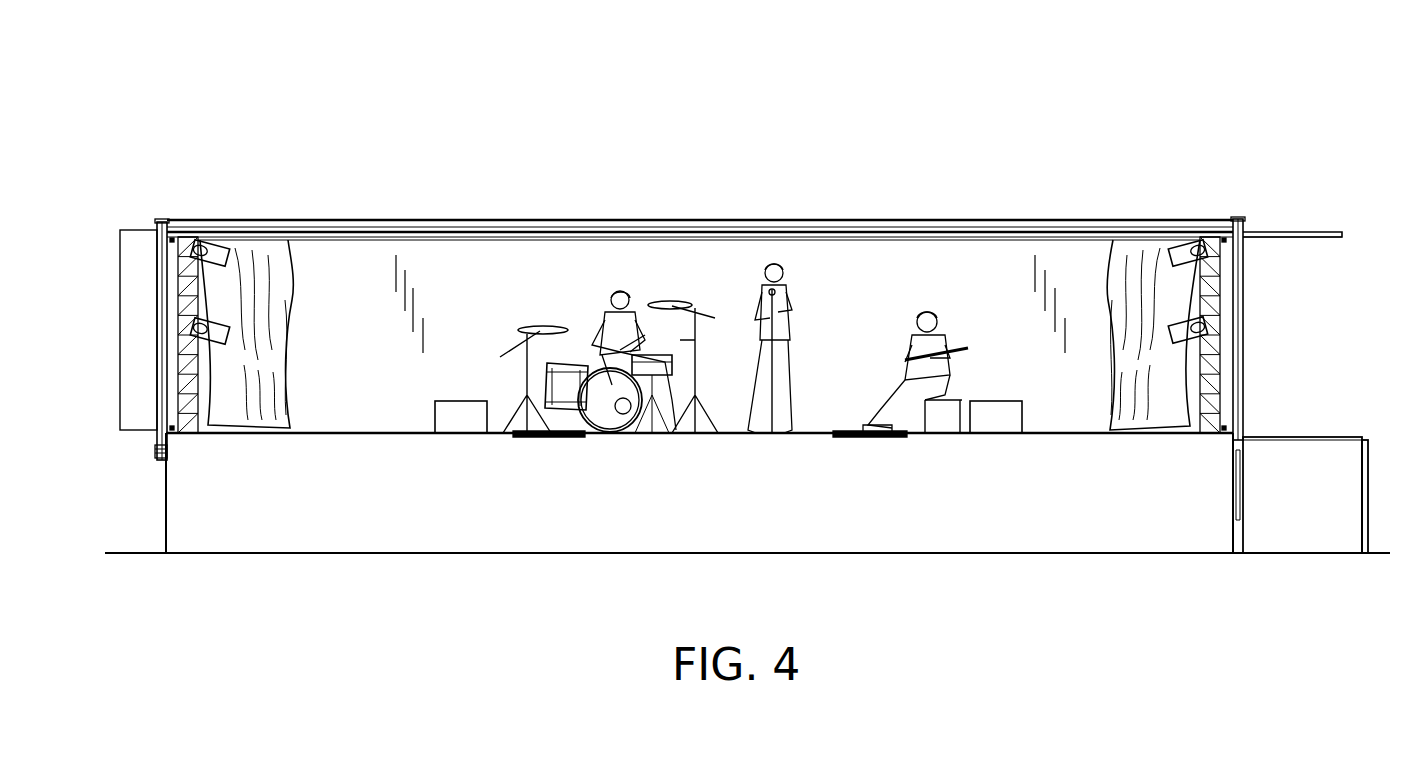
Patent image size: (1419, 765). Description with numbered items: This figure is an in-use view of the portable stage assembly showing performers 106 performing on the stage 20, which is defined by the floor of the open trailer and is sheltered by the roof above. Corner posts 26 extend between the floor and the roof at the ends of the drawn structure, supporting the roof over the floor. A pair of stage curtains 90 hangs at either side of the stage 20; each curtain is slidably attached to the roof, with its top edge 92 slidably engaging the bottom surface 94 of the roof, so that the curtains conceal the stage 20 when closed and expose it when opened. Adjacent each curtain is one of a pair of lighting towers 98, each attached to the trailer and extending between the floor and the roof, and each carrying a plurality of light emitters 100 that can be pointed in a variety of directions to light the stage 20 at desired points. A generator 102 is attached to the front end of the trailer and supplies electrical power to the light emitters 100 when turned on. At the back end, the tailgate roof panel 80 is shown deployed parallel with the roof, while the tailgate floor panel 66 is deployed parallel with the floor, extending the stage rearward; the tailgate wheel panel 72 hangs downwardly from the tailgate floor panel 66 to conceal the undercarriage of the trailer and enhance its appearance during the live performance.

The stage 20 is at (1026, 360).
The corner posts 26 is at (158, 275).
The tailgate floor panel 66 is at (1300, 435).
The tailgate wheel panel 72 is at (1368, 490).
The tailgate roof panel 80 is at (1323, 232).
The stage curtains 90 is at (263, 280).
The top edge 92 is at (250, 243).
The bottom surface 94 is at (530, 237).
The lighting towers 98 is at (203, 400).
The light emitters 100 is at (200, 262).
The generator 102 is at (120, 292).
The performers 106 is at (925, 310).